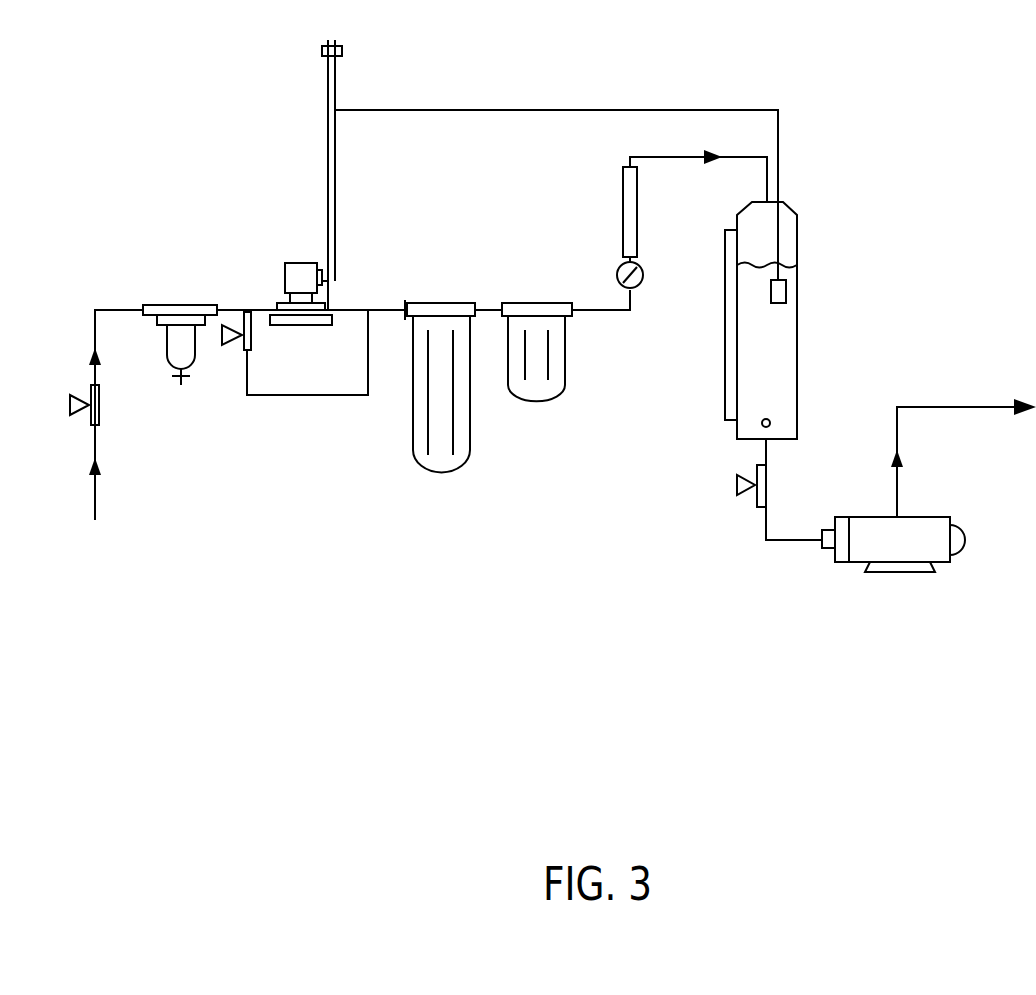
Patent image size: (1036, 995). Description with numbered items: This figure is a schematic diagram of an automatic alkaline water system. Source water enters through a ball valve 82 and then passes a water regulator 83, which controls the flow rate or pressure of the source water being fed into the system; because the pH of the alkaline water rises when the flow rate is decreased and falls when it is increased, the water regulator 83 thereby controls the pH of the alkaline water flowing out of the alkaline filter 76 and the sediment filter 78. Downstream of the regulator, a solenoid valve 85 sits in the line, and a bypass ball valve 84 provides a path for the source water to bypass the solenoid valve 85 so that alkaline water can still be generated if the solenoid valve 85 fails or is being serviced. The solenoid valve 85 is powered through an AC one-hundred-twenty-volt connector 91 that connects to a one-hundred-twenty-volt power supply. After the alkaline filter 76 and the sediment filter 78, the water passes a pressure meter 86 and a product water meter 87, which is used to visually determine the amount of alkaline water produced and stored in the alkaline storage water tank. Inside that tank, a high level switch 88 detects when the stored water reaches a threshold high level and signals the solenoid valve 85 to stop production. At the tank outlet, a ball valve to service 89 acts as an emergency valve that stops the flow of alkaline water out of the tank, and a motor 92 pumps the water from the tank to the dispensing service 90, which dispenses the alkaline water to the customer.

The alkaline filter 76 is at (438, 472).
The sediment filter 78 is at (535, 400).
The ball valve 82 is at (100, 405).
The water regulator 83 is at (177, 305).
The bypass ball valve 84 is at (247, 350).
The solenoid valve 85 is at (305, 263).
The pressure meter 86 is at (638, 285).
The product water meter 87 is at (637, 213).
The high level switch 88 is at (786, 291).
The ball valve to service 89 is at (757, 493).
The dispensing service 90 is at (985, 405).
The AC 120V connector 91 is at (342, 51).
The motor 92 is at (892, 572).